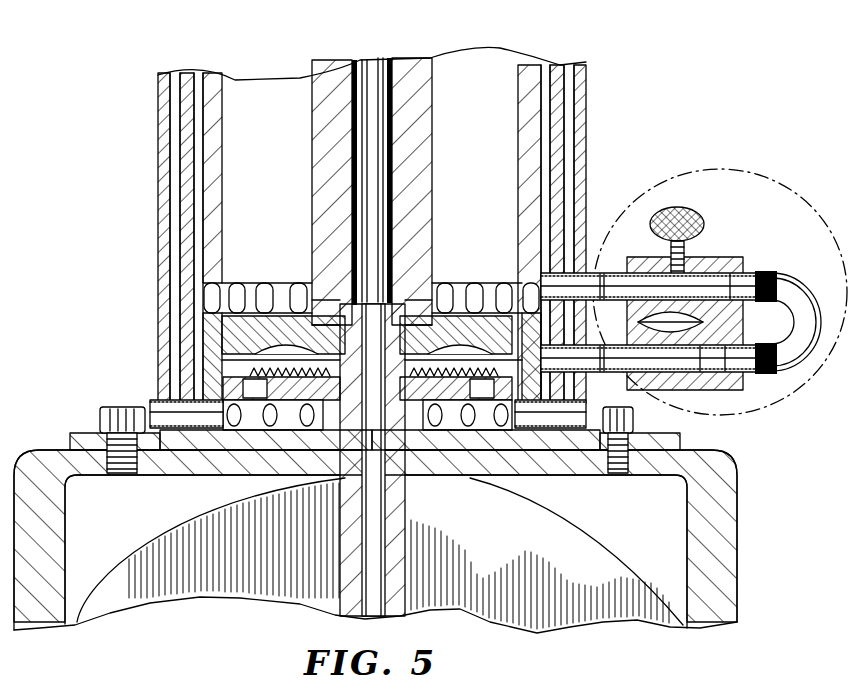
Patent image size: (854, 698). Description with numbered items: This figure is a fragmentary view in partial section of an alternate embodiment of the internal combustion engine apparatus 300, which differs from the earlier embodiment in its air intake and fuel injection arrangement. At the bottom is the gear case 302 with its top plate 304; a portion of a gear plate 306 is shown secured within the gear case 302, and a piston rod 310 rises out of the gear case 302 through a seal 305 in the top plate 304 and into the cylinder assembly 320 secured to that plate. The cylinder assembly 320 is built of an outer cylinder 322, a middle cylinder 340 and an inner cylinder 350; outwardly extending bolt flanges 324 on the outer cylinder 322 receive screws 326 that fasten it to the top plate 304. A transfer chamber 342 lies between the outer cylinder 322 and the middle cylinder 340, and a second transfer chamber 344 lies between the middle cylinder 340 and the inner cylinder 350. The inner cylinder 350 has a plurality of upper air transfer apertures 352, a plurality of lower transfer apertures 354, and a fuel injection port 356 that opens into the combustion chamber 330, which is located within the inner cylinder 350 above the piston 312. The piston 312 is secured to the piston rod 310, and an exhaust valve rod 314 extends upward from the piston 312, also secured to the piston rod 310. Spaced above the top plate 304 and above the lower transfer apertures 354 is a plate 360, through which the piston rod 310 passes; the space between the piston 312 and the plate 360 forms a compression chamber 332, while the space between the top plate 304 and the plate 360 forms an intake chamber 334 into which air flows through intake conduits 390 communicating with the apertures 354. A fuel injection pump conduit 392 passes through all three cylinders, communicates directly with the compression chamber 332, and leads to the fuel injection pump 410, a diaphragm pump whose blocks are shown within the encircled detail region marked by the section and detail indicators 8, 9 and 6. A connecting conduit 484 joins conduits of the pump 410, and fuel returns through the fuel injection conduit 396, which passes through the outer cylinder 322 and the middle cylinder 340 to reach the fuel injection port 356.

The internal combustion engine apparatus 300 is at (678, 110).
The gear case 302 is at (742, 548).
The top plate 304 is at (712, 458).
The seal 305 is at (330, 470).
The gear plate 306 is at (565, 528).
The piston rod 310 is at (352, 528).
The piston 312 is at (432, 280).
The exhaust valve rod 314 is at (420, 157).
The cylinder assembly 320 is at (158, 168).
The outer cylinder 322 is at (172, 208).
The bolt flanges 324 is at (78, 432).
The screws 326 is at (112, 407).
The combustion chamber 330 is at (476, 80).
The compression chamber 332 is at (525, 300).
The intake chamber 334 is at (480, 455).
The middle cylinder 340 is at (186, 230).
The transfer chamber 342 is at (176, 275).
The transfer chamber 344 is at (200, 186).
The inner cylinder 350 is at (212, 152).
The upper air transfer apertures 352 is at (236, 284).
The lower transfer apertures 354 is at (285, 430).
The fuel injection port 356 is at (523, 290).
The plate 360 is at (486, 430).
The intake conduits 390 is at (176, 400).
The fuel injection pump conduit 392 is at (606, 378).
The fuel injection conduit 396 is at (598, 272).
The fuel injection pump 410 is at (725, 252).
The connecting conduit 484 is at (805, 288).
The detail circle 8 is at (786, 190).
The section line 9- 9 is at (660, 192).
The section line 6- 6 is at (212, 384).